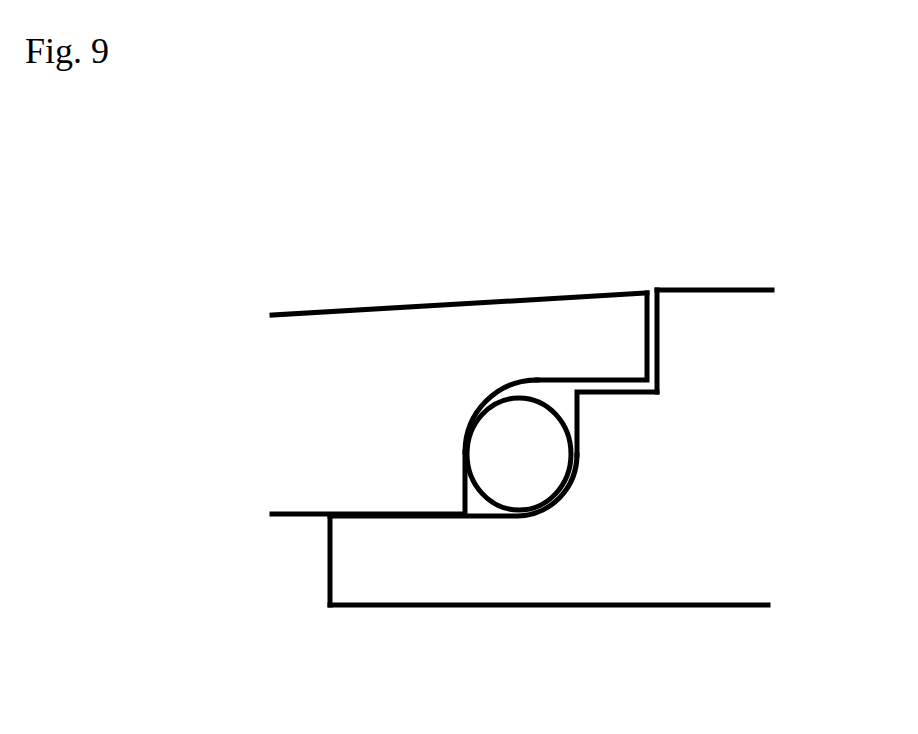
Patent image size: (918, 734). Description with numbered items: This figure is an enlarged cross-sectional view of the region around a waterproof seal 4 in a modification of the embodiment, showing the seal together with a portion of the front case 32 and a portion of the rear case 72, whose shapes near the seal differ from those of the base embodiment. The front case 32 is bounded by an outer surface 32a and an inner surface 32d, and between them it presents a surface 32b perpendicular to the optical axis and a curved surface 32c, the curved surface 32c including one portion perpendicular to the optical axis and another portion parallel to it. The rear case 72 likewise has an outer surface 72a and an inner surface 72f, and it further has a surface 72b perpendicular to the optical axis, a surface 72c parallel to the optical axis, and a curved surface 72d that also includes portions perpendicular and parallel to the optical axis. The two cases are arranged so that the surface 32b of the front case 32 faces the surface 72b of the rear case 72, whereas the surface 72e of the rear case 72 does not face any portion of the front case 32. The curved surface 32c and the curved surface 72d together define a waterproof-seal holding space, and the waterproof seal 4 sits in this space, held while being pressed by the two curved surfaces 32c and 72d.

The waterproof seal 4 is at (497, 454).
The front case 32 is at (297, 356).
The outer surface 32a is at (367, 306).
The surface perpendicular to the optical axis 32b is at (641, 336).
The curved surface 32c is at (538, 377).
The inner surface 32d is at (302, 518).
The rear case 72 is at (750, 369).
The outer surface 72a is at (755, 290).
The surface perpendicular to the optical axis 72b is at (661, 322).
The surface parallel to the optical axis 72c is at (622, 397).
The curved surface 72d is at (575, 486).
The surface 72e is at (335, 553).
The inner surface 72f is at (665, 610).